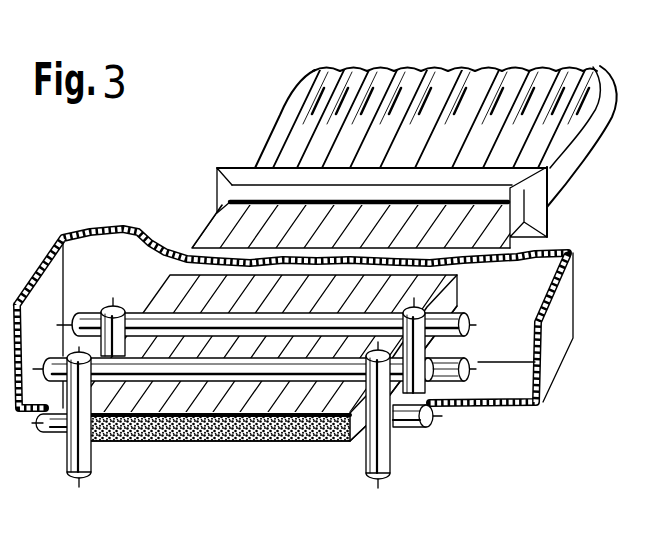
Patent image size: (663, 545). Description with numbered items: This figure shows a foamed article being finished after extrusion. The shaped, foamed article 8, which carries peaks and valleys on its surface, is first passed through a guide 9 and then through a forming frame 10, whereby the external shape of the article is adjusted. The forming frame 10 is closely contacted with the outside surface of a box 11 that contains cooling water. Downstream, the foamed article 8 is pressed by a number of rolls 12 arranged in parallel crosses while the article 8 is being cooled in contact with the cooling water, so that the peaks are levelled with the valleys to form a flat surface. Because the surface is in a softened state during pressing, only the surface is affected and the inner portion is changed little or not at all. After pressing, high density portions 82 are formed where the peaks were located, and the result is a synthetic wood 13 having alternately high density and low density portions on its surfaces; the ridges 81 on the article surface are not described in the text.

The foamed article 8 is at (268, 100).
The belt ridges 81 is at (359, 69).
The guide 9 is at (540, 204).
The forming frame 10 is at (228, 258).
The box 11 is at (530, 289).
The rolls 12 is at (80, 383).
The synthetic wood 13 is at (319, 456).
The high density portions 82 is at (163, 398).